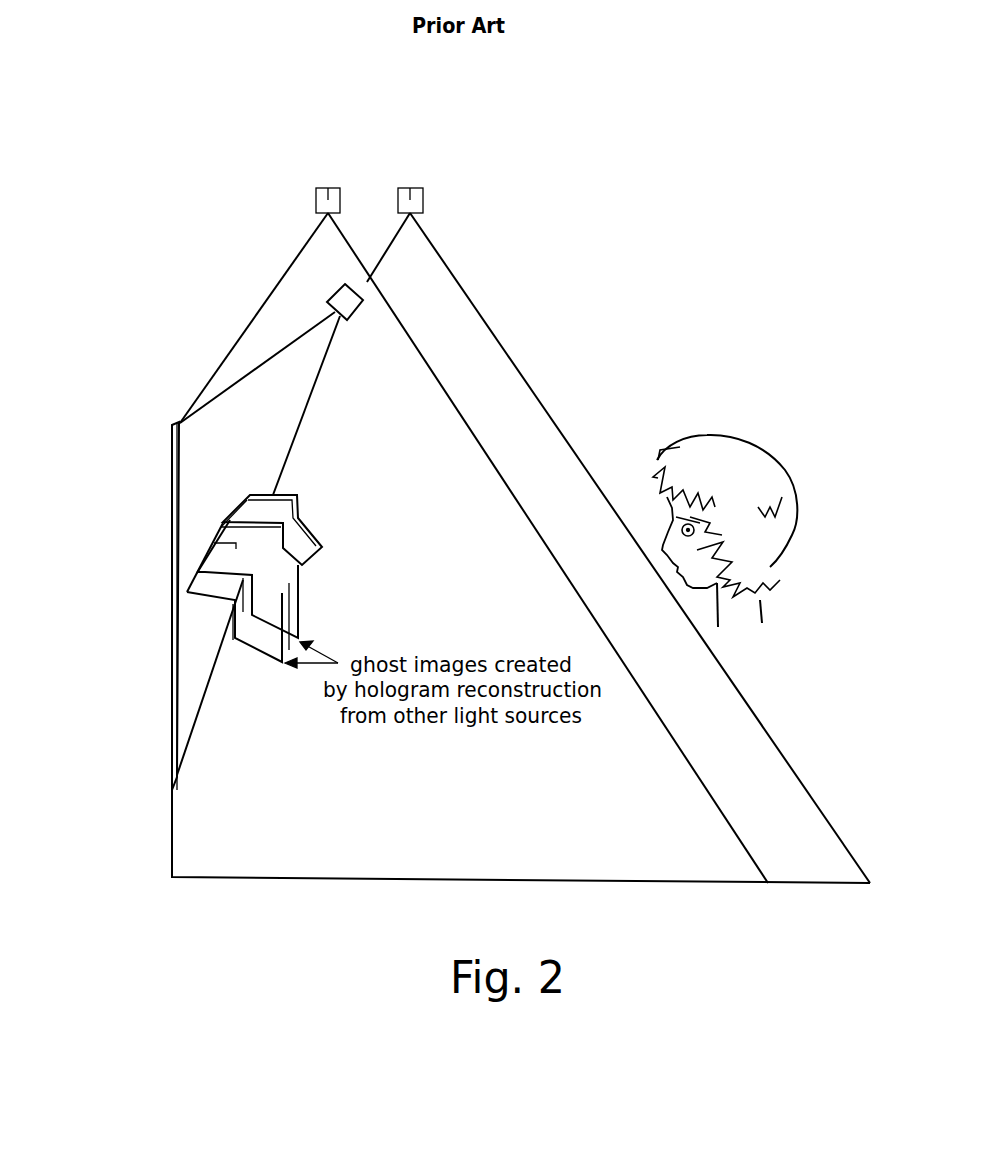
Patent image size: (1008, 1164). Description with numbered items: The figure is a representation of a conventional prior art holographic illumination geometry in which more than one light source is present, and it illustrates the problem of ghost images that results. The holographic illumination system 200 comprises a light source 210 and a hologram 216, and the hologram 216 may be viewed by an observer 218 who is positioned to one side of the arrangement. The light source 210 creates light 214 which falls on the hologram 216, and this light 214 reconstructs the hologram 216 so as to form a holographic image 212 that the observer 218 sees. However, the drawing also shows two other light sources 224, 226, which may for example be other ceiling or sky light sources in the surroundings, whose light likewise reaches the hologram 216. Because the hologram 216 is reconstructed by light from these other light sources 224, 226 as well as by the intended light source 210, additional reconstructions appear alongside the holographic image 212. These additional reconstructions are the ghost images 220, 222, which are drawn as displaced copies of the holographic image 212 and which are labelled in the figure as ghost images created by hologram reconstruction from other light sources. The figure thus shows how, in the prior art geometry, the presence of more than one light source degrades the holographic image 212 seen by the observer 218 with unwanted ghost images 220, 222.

The holographic illumination system 200 is at (617, 241).
The light source 210 is at (340, 297).
The holographic image 212 is at (298, 552).
The light 214 is at (223, 427).
The hologram 216 is at (168, 662).
The observer 218 is at (742, 460).
The ghost image 220 is at (258, 655).
The ghost image 222 is at (311, 530).
The other light source 224 is at (330, 195).
The other light source 226 is at (410, 195).